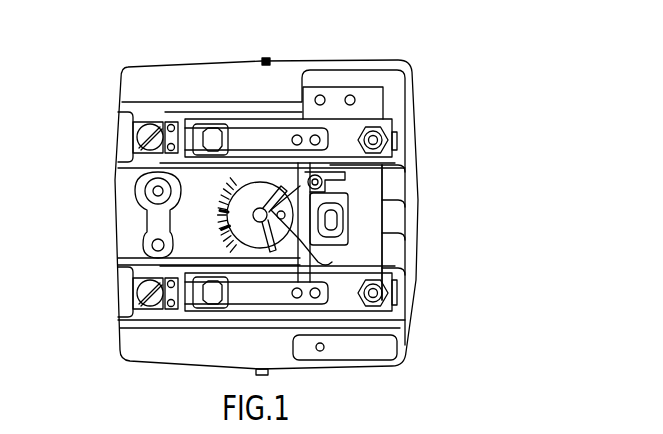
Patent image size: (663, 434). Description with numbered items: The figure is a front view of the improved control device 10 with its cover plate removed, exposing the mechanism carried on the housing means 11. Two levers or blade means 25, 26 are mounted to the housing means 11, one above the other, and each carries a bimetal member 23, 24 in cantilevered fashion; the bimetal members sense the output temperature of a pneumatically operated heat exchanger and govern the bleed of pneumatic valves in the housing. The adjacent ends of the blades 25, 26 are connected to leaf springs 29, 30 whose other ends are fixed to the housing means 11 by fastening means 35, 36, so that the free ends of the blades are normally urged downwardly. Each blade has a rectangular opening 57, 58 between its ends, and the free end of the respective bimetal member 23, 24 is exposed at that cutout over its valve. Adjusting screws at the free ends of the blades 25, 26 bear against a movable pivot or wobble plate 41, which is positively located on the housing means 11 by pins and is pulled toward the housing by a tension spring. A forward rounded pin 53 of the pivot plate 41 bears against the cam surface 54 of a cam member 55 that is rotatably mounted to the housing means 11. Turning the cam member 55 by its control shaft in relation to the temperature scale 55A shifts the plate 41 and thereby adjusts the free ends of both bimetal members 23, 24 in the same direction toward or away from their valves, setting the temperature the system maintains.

The control device 10 is at (110, 48).
The housing means 11 is at (410, 292).
The bimetal member 23 is at (266, 142).
The bimetal member 24 is at (262, 292).
The lever or blade means 25 is at (348, 135).
The lever or blade means 26 is at (347, 302).
The leaf spring 29 is at (180, 128).
The leaf spring 30 is at (176, 294).
The fastening means 35 is at (136, 129).
The fastening means 36 is at (136, 290).
The pivot or wobble plate 41 is at (370, 218).
The forward rounded pin 53 is at (318, 244).
The cam surface 54 is at (238, 214).
The cam member 55 is at (222, 228).
The temperature scale 55A is at (205, 217).
The rectangular opening 57 is at (246, 124).
The rectangular opening 58 is at (237, 306).